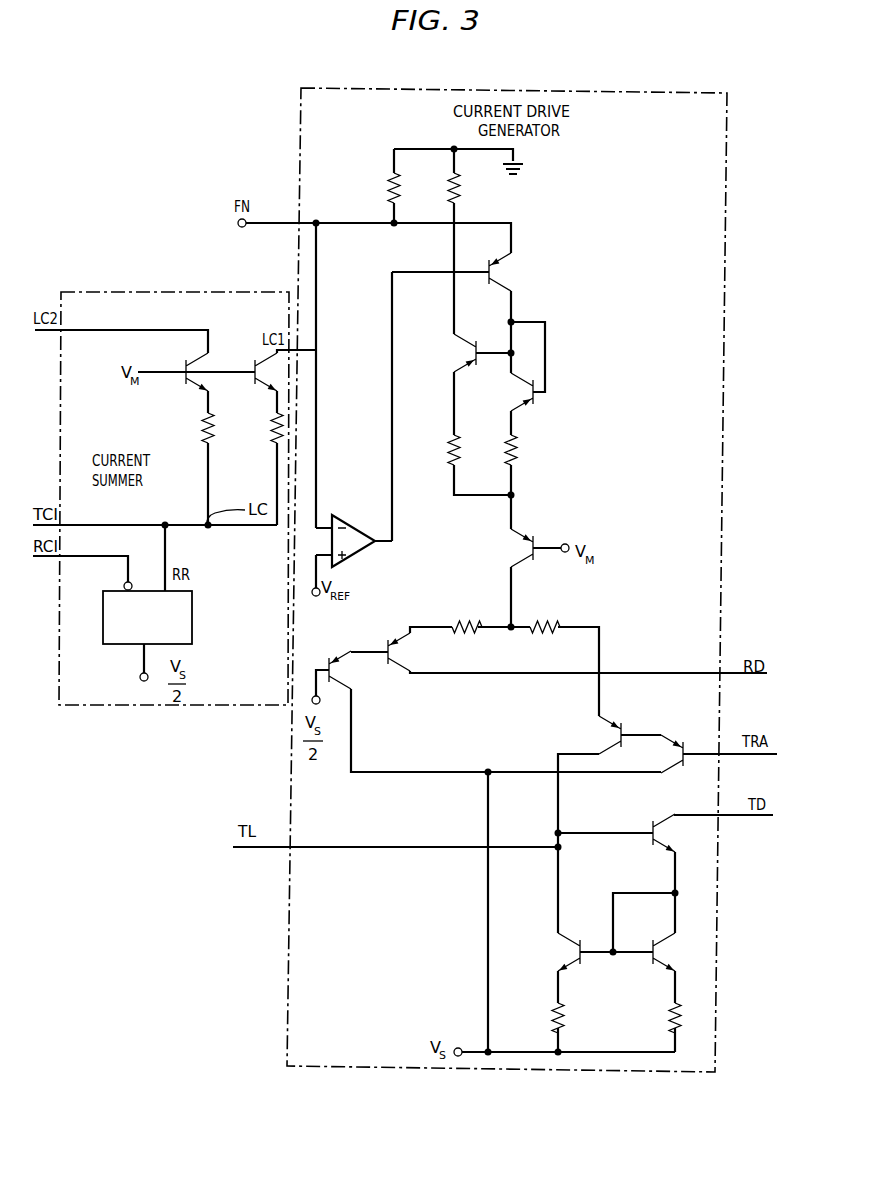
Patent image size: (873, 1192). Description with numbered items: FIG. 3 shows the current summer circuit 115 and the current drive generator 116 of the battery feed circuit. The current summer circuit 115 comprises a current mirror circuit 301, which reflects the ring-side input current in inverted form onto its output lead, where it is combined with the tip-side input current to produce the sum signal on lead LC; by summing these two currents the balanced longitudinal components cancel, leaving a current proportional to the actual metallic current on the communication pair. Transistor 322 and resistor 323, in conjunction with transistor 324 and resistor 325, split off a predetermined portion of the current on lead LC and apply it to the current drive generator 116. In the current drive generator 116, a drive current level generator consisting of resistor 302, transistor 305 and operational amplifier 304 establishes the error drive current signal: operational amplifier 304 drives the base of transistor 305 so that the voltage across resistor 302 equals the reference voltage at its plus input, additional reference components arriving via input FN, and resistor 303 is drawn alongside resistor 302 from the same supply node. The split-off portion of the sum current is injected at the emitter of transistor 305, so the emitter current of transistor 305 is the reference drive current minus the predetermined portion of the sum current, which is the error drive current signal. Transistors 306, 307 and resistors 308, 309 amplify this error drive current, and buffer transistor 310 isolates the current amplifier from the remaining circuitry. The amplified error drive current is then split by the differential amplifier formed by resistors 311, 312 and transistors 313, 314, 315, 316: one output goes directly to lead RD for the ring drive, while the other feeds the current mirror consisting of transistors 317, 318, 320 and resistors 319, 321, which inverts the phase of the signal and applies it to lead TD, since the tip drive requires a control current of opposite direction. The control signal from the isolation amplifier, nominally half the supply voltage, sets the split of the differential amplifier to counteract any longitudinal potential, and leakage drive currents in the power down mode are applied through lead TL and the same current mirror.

The current summer circuit 115 is at (149, 298).
The current drive generator 116 is at (346, 94).
The current mirror circuit 301 is at (104, 645).
The resistor 302 is at (379, 188).
The resistor 303 is at (468, 188).
The operational amplifier 304 is at (353, 531).
The transistor 305 is at (496, 282).
The transistor 306 is at (470, 351).
The transistor 307 is at (526, 393).
The resistor 308 is at (525, 450).
The resistor 309 is at (436, 450).
The buffer transistor 310 is at (527, 551).
The resistor 311 is at (467, 614).
The resistor 312 is at (545, 614).
The transistor 313 is at (393, 662).
The transistor 314 is at (333, 670).
The transistor 315 is at (619, 740).
The transistor 316 is at (682, 760).
The transistor 317 is at (657, 830).
The transistor 318 is at (657, 944).
The resistor 319 is at (658, 1018).
The transistor 320 is at (570, 946).
The resistor 321 is at (542, 1018).
The transistor 322 is at (253, 357).
The resistor 323 is at (264, 432).
The transistor 324 is at (181, 376).
The resistor 325 is at (202, 426).